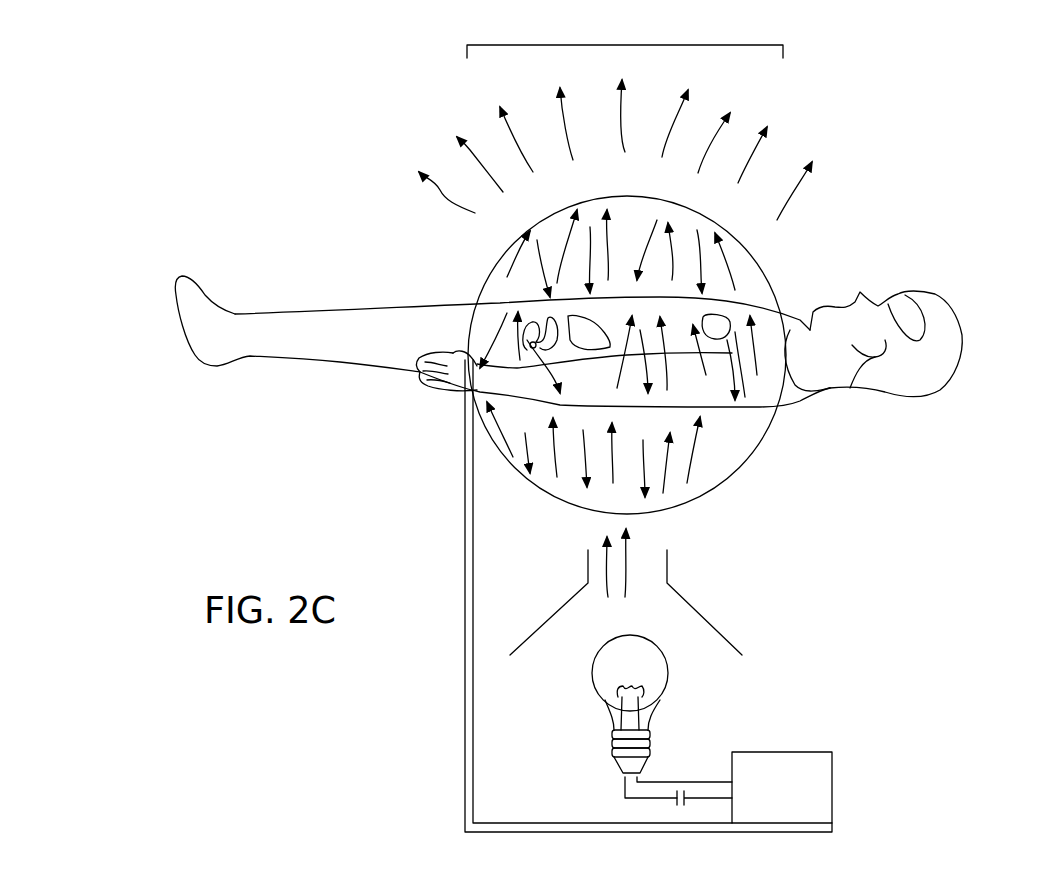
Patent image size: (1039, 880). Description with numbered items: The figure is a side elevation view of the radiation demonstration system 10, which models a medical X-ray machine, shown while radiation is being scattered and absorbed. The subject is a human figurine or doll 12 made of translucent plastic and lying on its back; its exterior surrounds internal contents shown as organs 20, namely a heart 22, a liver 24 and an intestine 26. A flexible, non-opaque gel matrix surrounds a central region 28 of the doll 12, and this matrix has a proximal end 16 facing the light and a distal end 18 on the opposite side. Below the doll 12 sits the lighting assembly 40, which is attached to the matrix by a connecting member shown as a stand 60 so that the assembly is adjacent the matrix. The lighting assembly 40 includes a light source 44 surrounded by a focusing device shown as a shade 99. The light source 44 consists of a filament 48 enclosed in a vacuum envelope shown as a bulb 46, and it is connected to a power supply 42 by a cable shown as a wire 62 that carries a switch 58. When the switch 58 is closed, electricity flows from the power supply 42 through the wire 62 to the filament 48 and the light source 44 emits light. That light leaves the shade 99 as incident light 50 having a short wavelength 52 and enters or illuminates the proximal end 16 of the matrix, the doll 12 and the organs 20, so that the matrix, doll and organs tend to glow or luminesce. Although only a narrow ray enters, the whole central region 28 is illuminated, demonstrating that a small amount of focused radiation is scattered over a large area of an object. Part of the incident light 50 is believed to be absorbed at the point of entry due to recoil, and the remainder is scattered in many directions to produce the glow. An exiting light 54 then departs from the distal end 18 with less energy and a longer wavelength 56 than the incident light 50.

The radiation demonstration system 10 is at (353, 85).
The doll 12 is at (972, 317).
The proximal end 16 is at (692, 512).
The distal end 18 is at (672, 197).
The organs 20 is at (508, 293).
The heart 22 is at (681, 297).
The liver 24 is at (598, 322).
The intestine 26 is at (555, 320).
The central region 28 is at (628, 45).
The lighting assembly 40 is at (641, 596).
The power supply 42 is at (834, 790).
The light source 44 is at (614, 697).
The bulb 46 is at (594, 672).
The filament 48 is at (645, 687).
The incident light 50 is at (671, 592).
The short wavelength 52 is at (600, 562).
The exiting light 54 is at (788, 103).
The longer wavelength 56 is at (445, 195).
The switch 58 is at (672, 800).
The stand 60 is at (466, 599).
The wire 62 is at (707, 797).
The shade 99 is at (705, 621).